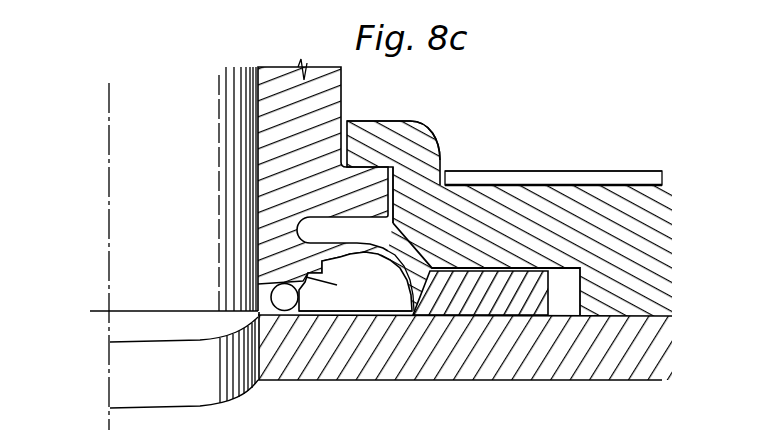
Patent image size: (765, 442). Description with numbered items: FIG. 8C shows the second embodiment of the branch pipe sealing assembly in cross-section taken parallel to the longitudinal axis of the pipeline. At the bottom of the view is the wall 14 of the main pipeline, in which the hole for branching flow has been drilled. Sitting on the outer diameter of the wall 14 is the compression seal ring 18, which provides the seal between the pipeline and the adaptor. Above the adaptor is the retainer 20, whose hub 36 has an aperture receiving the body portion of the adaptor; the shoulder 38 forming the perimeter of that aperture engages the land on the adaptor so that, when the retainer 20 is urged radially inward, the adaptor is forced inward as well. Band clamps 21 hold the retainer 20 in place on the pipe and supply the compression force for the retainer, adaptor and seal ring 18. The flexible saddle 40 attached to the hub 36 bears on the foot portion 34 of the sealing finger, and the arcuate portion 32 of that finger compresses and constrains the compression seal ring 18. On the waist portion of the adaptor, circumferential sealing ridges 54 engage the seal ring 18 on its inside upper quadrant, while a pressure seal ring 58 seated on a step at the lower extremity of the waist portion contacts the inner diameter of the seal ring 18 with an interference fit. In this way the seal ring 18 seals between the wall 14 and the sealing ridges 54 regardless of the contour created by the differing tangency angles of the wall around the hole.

The wall 14 is at (458, 375).
The seal ring 18 is at (324, 300).
The retainer 20 is at (603, 169).
The band clamps 21 is at (495, 171).
The arcuate portion 32 is at (383, 257).
The foot portion 34 is at (503, 282).
The hub 36 is at (430, 138).
The shoulder 38 is at (375, 121).
The flexible saddle 40 is at (648, 230).
The circumferential sealing ridges 54 is at (355, 281).
The pressure seal ring 58 is at (287, 298).